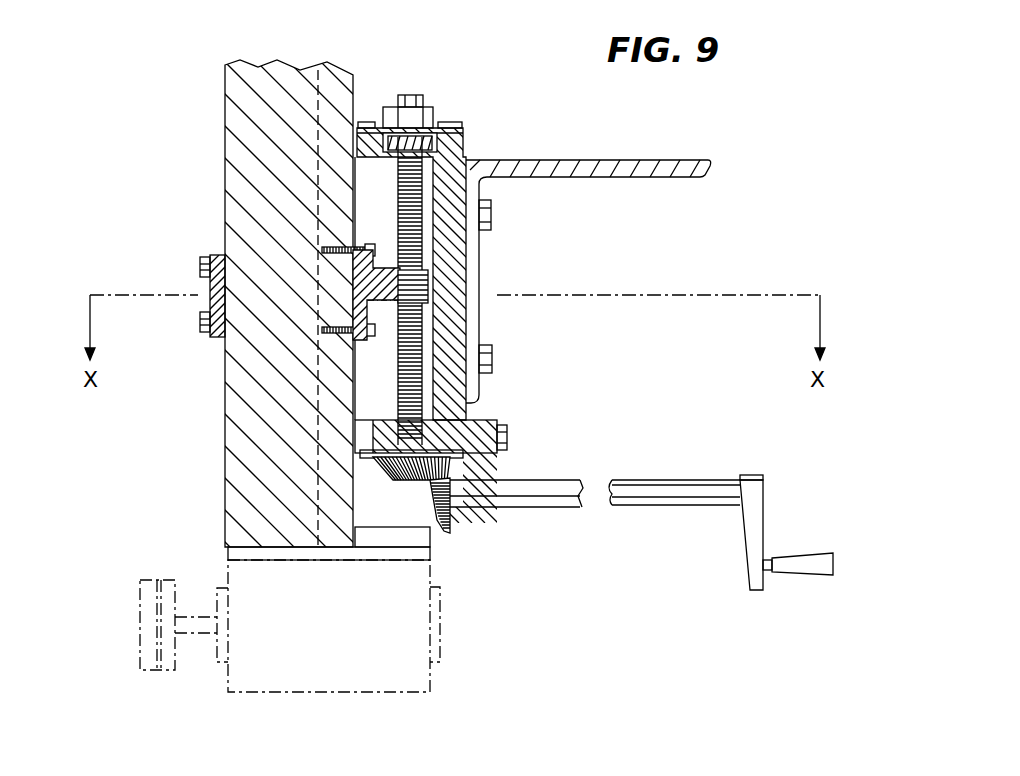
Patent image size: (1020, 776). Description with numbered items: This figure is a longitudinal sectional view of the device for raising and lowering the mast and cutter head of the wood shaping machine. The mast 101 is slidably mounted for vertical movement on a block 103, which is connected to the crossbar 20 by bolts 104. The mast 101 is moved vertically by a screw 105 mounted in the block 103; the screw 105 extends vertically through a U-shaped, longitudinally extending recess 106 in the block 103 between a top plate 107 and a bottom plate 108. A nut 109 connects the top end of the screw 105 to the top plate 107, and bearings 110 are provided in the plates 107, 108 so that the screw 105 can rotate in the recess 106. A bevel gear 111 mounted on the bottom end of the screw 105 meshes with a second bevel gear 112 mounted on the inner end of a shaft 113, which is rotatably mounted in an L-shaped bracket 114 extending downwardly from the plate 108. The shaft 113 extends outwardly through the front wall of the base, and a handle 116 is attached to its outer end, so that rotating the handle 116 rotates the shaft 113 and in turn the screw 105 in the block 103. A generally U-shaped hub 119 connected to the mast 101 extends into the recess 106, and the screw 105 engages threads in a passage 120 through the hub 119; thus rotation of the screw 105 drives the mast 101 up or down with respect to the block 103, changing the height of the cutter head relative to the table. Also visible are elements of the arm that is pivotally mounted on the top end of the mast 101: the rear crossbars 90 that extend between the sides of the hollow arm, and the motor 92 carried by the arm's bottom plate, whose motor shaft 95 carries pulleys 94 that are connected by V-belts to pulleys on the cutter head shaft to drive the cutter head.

The mast 101 is at (245, 90).
The hub 119 is at (320, 250).
The rear crossbars 90 is at (205, 268).
The screw 105 is at (440, 335).
The block 103 is at (450, 180).
The bottom plate 108 is at (467, 418).
The top plate 107 is at (463, 138).
The nut 109 is at (440, 95).
The bearings 110 is at (395, 122).
The crossbar 20 is at (638, 176).
The bolts 104 is at (491, 215).
The recess 106 is at (372, 390).
The passage 120 is at (435, 290).
The bevel gear 111 is at (373, 470).
The second bevel gear 112 is at (447, 533).
The L-shaped bracket 114 is at (490, 522).
The shaft 113 is at (675, 490).
The handle 116 is at (755, 528).
The motor 92 is at (330, 690).
The motor shaft 95 is at (183, 635).
The pulleys 94 is at (140, 598).